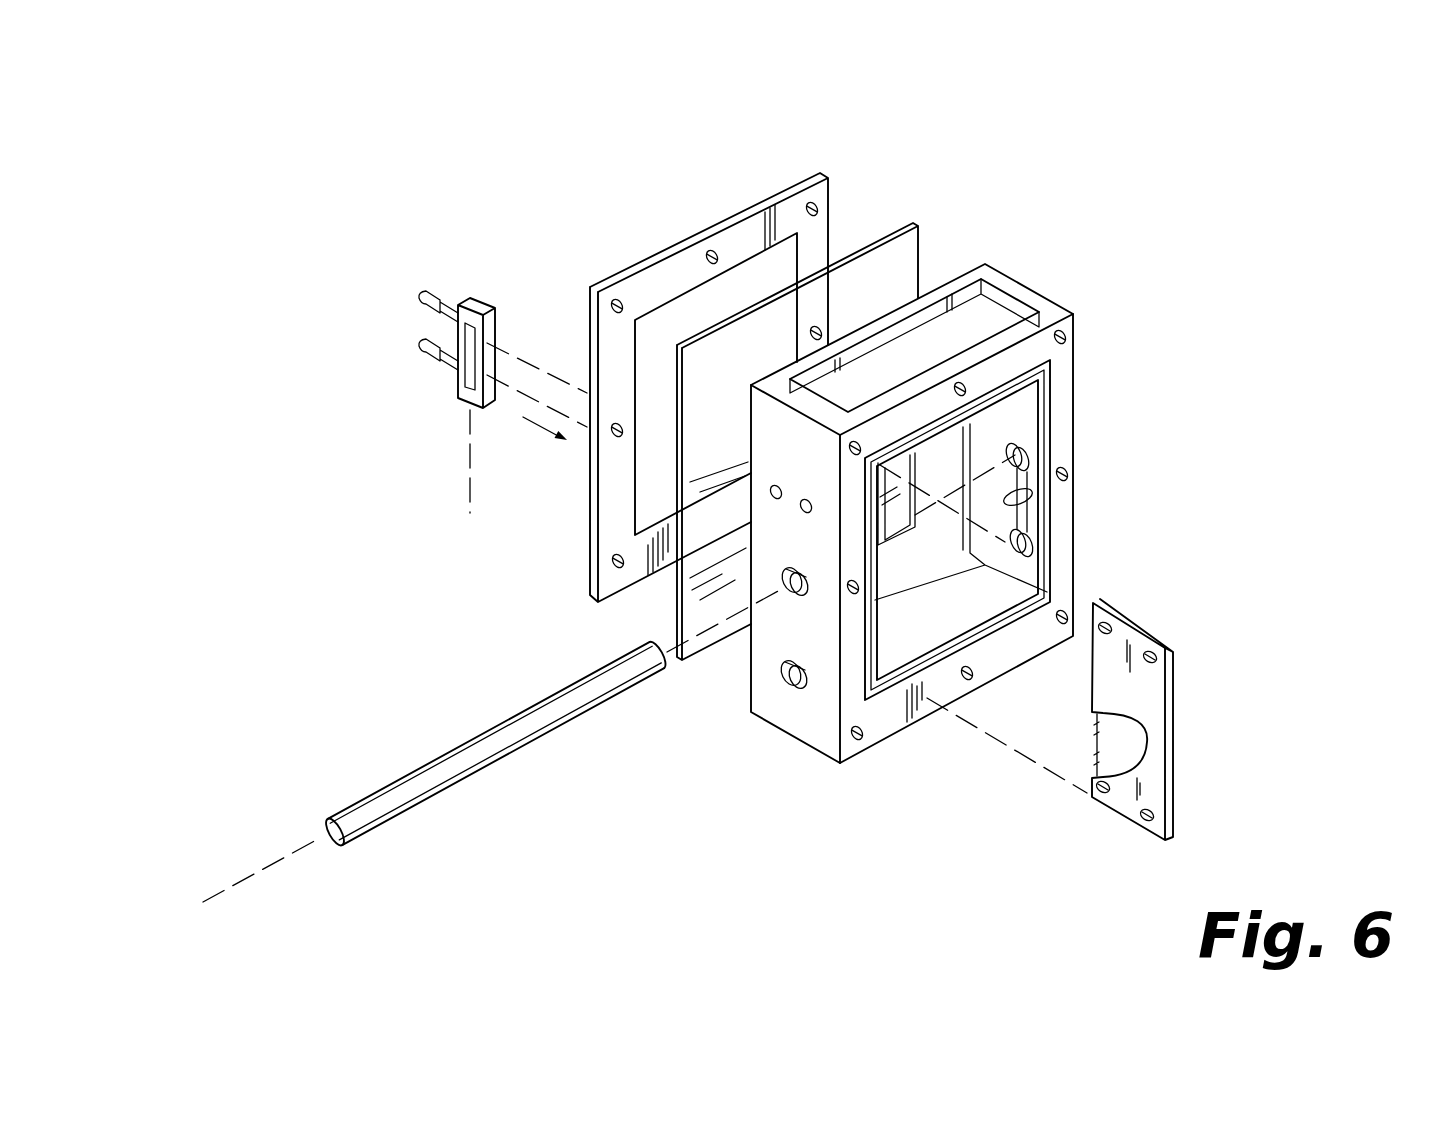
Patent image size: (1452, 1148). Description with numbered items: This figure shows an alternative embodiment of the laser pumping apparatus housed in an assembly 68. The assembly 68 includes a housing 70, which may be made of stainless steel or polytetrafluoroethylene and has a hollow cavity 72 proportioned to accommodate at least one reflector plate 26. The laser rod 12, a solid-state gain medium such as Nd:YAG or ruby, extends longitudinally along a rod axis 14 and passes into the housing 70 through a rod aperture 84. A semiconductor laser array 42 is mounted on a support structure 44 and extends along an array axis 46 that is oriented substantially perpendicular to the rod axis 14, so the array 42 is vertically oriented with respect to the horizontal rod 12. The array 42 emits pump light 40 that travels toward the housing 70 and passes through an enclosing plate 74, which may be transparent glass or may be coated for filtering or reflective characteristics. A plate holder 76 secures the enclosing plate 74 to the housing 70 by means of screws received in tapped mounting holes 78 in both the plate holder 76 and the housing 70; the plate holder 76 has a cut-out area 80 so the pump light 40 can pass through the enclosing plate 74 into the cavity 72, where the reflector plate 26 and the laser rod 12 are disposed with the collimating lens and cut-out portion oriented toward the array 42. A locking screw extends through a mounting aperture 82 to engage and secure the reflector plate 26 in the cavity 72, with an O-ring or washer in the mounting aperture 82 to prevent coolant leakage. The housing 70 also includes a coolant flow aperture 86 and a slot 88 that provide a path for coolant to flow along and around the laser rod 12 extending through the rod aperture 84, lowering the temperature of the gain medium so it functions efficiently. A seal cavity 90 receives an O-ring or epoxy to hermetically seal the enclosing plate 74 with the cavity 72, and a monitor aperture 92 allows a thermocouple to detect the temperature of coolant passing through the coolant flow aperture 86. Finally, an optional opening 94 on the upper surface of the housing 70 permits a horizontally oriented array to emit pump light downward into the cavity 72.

The laser rod 12 is at (380, 790).
The rod axis 14 is at (272, 860).
The reflector plate 26 is at (1180, 609).
The pump light 40 is at (553, 346).
The semiconductor laser array 42 is at (478, 285).
The support structure 44 is at (425, 296).
The array axis 46 is at (470, 490).
The assembly 68 is at (1188, 191).
The housing 70 is at (1052, 282).
The hollow cavity 72 is at (978, 608).
The enclosing plate 74 is at (910, 214).
The plate holder 76 is at (677, 220).
The tapped mounting holes 78 is at (630, 303).
The cut-out area 80 is at (729, 291).
The mounting aperture 82 is at (806, 496).
The rod aperture 84 is at (796, 592).
The coolant flow aperture 86 is at (778, 680).
The slot 88 is at (1032, 500).
The seal cavity 90 is at (1052, 396).
The monitor aperture 92 is at (792, 700).
The opening 94 is at (950, 336).